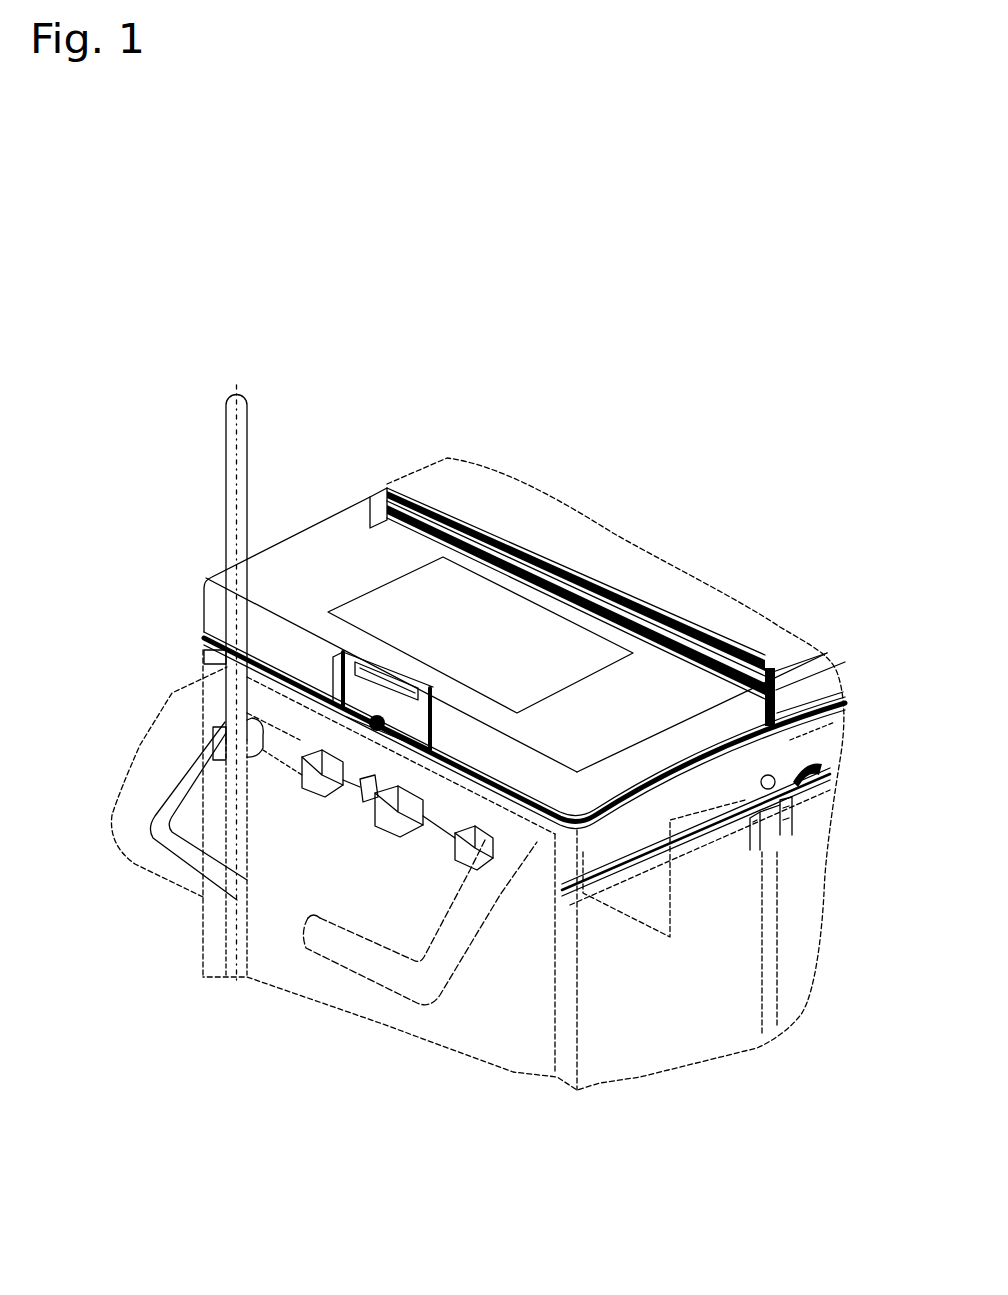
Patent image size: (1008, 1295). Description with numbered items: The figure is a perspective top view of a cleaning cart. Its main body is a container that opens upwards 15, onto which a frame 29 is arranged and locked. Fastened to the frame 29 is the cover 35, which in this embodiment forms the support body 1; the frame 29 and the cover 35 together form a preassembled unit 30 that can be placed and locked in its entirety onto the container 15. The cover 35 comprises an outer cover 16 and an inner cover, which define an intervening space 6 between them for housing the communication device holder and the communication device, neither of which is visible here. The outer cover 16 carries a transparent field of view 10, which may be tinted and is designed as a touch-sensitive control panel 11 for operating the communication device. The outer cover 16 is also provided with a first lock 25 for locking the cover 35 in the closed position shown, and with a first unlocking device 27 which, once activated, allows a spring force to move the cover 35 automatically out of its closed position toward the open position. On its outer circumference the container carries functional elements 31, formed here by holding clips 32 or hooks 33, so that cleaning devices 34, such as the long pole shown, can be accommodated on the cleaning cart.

The support body 1 is at (296, 436).
The cover 35 is at (477, 760).
The intervening space 6 is at (815, 738).
The transparent field of view 10 is at (380, 592).
The touch-sensitive control panel 11 is at (480, 635).
The container that opens upwards 15 is at (687, 808).
The outer cover 16 is at (203, 602).
The first lock 25 is at (372, 727).
The first unlocking device 27 is at (380, 675).
The frame 29 is at (227, 645).
The preassembled unit 30 is at (690, 892).
The functional elements 31 is at (223, 667).
The holding clips 32 is at (378, 822).
The hooks 33 is at (462, 858).
The cleaning devices 34 is at (227, 482).